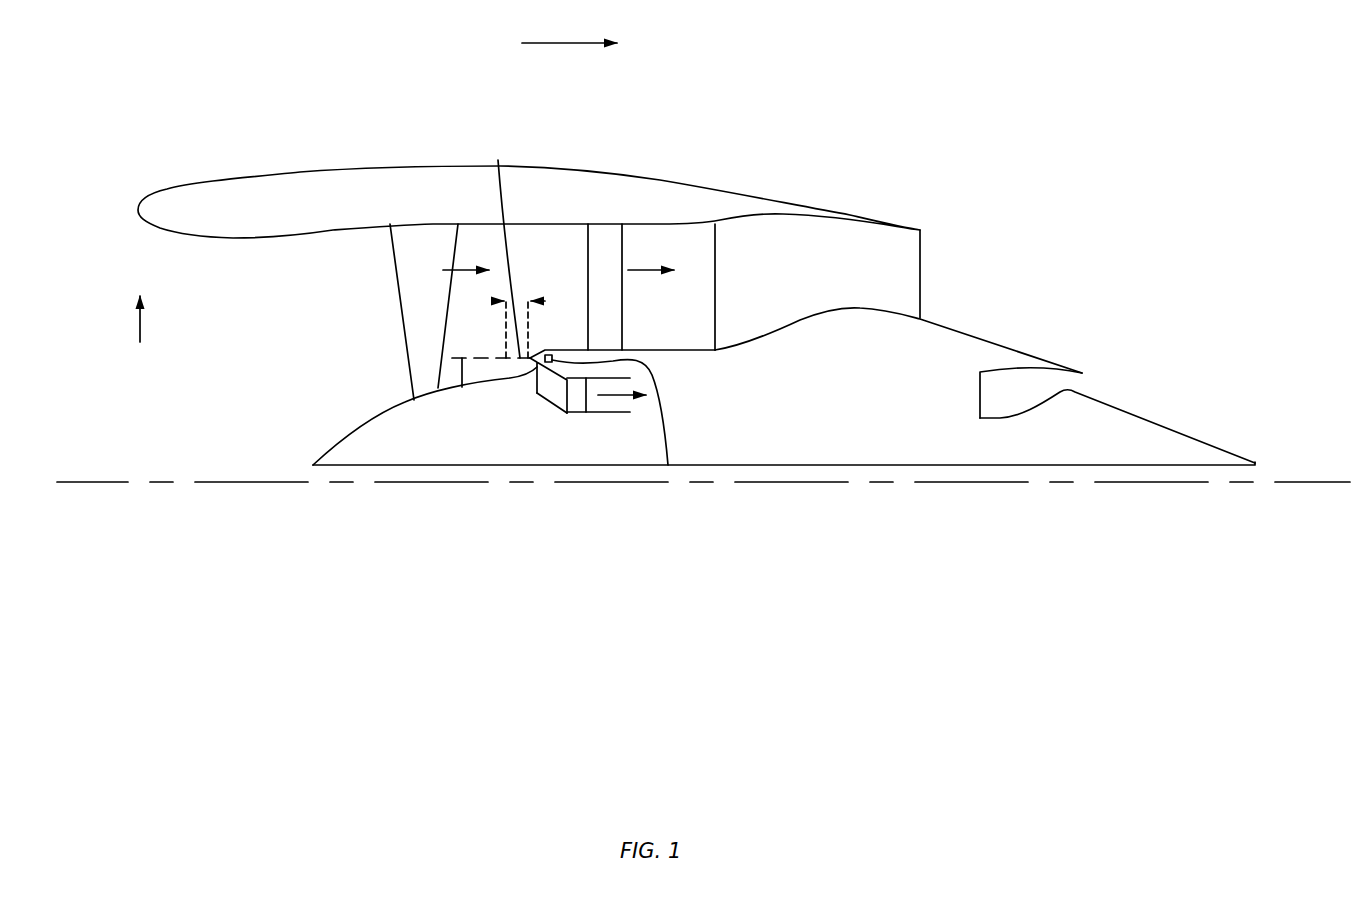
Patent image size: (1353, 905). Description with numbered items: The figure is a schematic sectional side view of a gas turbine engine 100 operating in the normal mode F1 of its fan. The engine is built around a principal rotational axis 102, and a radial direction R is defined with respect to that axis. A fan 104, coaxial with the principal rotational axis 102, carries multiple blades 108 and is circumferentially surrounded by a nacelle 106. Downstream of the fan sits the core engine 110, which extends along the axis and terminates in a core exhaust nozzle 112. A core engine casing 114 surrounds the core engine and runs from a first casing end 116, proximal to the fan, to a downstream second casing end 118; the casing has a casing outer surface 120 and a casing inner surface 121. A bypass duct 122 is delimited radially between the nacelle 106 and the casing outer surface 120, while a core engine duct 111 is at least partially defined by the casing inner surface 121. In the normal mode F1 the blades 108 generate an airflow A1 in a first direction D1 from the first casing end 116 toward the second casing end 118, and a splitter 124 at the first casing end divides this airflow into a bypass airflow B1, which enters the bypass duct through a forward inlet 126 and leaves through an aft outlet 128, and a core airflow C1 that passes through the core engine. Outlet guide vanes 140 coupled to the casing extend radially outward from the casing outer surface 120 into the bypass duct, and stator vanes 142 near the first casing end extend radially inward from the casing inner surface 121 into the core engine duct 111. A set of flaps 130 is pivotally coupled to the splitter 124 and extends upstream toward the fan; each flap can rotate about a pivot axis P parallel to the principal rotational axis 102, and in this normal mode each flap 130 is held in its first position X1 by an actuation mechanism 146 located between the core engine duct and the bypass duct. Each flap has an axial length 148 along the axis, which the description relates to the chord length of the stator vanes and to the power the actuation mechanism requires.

The gas turbine engine 100 is at (1052, 74).
The principal rotational axis 102 is at (108, 480).
The fan 104 is at (390, 393).
The nacelle 106 is at (375, 167).
The blades 108 is at (400, 252).
The core engine 110 is at (760, 413).
The core engine duct 111 is at (527, 378).
The core exhaust nozzle 112 is at (1087, 383).
The core engine casing 114 is at (752, 339).
The first casing end 116 is at (517, 369).
The second casing end 118 is at (1084, 369).
The casing outer surface 120 is at (695, 350).
The casing inner surface 121 is at (586, 412).
The bypass duct 122 is at (872, 262).
The splitter 124 is at (530, 358).
The forward inlet 126 is at (523, 263).
The aft outlet 128 is at (910, 232).
The flaps 130 is at (505, 245).
The outlet guide vanes 140 is at (605, 233).
The stator vanes 142 is at (557, 395).
The actuation mechanism 146 is at (670, 465).
The axial length 148 is at (496, 301).
The airflow A1 is at (465, 268).
The bypass airflow B1 is at (648, 263).
The core airflow C1 is at (615, 397).
The first direction D1 is at (569, 28).
The normal mode F1 is at (369, 293).
The radial direction R is at (129, 320).
The first position X1 is at (496, 350).
The pivot axis P is at (462, 387).